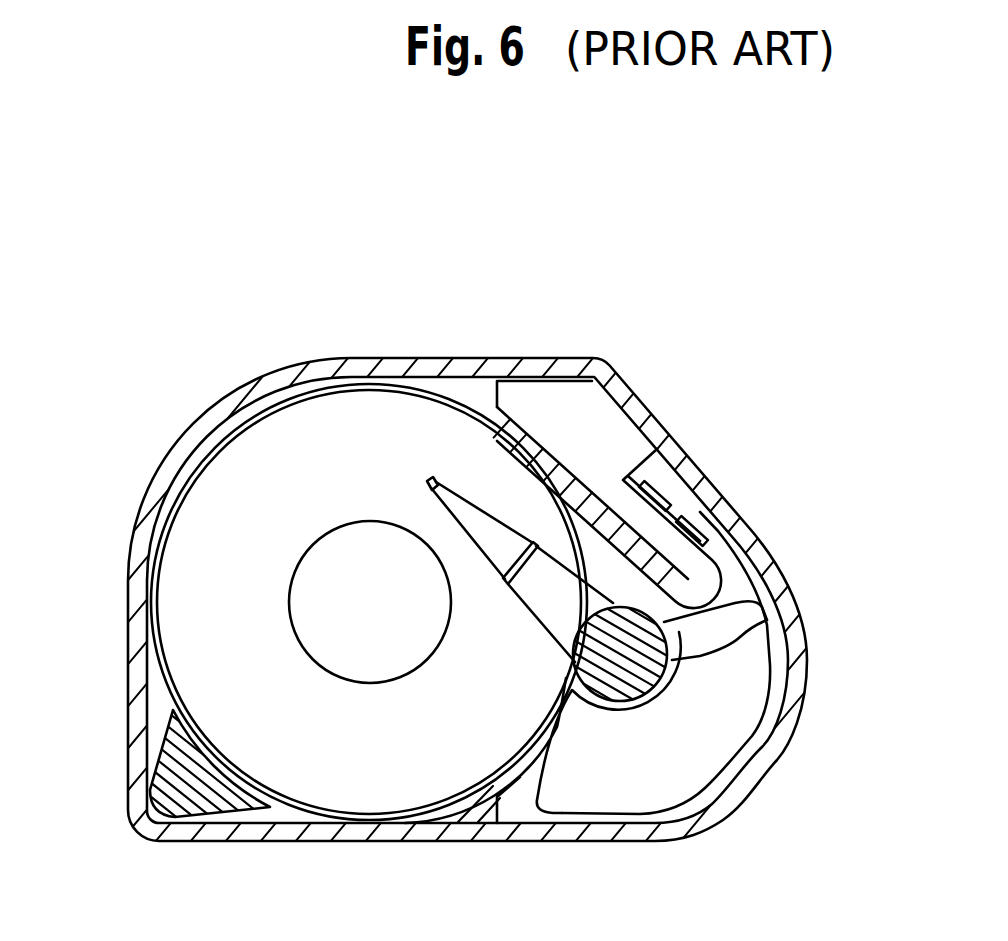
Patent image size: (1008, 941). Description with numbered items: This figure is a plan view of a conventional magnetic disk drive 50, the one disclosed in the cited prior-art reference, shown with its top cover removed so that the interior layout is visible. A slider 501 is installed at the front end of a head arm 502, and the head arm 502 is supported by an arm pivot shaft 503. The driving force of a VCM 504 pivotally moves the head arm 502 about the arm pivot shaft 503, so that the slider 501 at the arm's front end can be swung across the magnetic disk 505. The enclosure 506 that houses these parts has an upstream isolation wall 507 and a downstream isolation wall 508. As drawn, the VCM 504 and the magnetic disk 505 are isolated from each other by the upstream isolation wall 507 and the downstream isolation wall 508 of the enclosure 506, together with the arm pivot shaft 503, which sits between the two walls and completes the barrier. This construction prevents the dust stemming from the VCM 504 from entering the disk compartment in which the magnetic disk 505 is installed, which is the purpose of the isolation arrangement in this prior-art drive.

The magnetic disk drive 50 is at (700, 236).
The slider 501 is at (435, 482).
The head arm 502 is at (538, 616).
The arm pivot shaft 503 is at (778, 620).
The VCM 504 is at (740, 756).
The magnetic disk 505 is at (163, 593).
The enclosure 506 is at (425, 359).
The upstream isolation wall 507 is at (610, 527).
The downstream isolation wall 508 is at (508, 826).